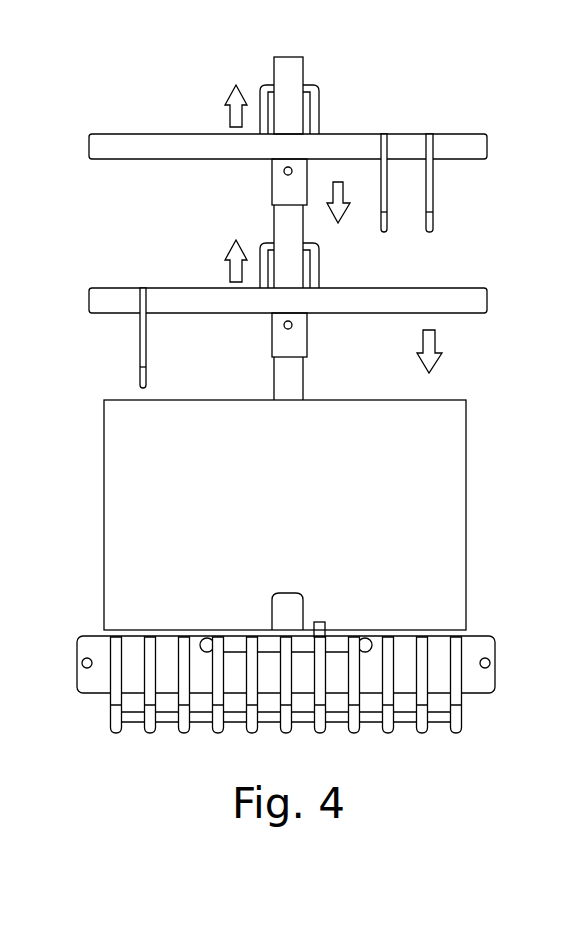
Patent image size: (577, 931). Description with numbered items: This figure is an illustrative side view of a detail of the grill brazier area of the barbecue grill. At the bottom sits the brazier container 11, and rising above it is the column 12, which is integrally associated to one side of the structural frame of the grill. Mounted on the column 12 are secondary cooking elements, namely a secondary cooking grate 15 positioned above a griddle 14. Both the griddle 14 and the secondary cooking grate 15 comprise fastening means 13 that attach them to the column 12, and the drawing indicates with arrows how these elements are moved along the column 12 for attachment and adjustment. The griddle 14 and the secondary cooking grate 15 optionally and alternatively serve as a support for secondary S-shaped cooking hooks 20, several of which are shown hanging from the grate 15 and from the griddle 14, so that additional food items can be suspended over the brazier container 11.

The brazier container 11 is at (440, 514).
The column 12 is at (287, 217).
The fastening means 13 is at (313, 113).
The griddle 14 is at (473, 300).
The secondary cooking grate 15 is at (477, 146).
The secondary S-shaped cooking hooks 20 is at (435, 190).